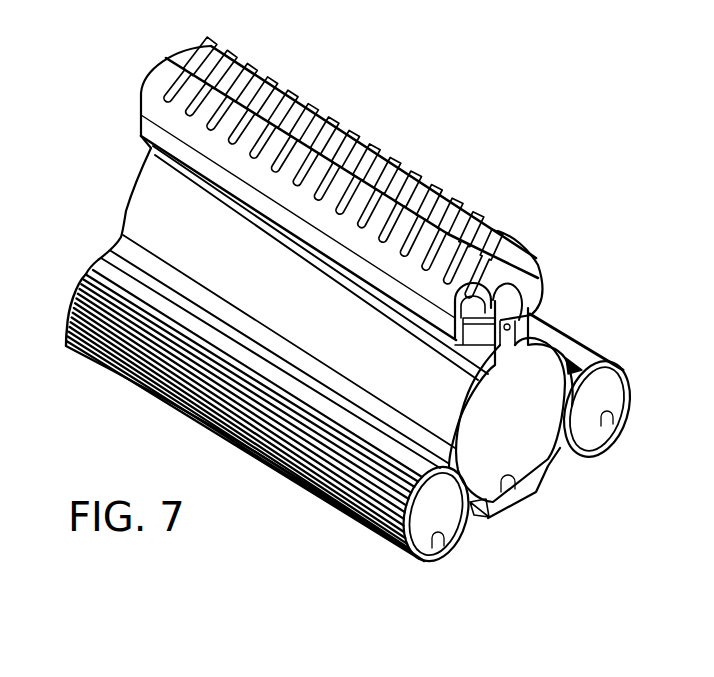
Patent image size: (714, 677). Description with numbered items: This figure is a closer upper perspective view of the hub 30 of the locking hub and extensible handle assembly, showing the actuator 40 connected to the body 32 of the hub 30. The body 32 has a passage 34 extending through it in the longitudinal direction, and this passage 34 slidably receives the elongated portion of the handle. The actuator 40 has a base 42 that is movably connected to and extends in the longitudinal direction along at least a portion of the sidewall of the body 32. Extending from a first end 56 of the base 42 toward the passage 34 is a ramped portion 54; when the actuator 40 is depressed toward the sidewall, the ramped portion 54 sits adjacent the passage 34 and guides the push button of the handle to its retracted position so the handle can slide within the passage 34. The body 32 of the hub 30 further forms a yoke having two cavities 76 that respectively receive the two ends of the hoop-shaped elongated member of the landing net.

The hub 30 is at (307, 511).
The body 32 is at (519, 482).
The passage 34 is at (495, 481).
The actuator 40 is at (372, 128).
The base 42 is at (150, 99).
The ramped portion 54 is at (503, 321).
The first end 56 is at (503, 240).
The cavities 76 is at (425, 540).